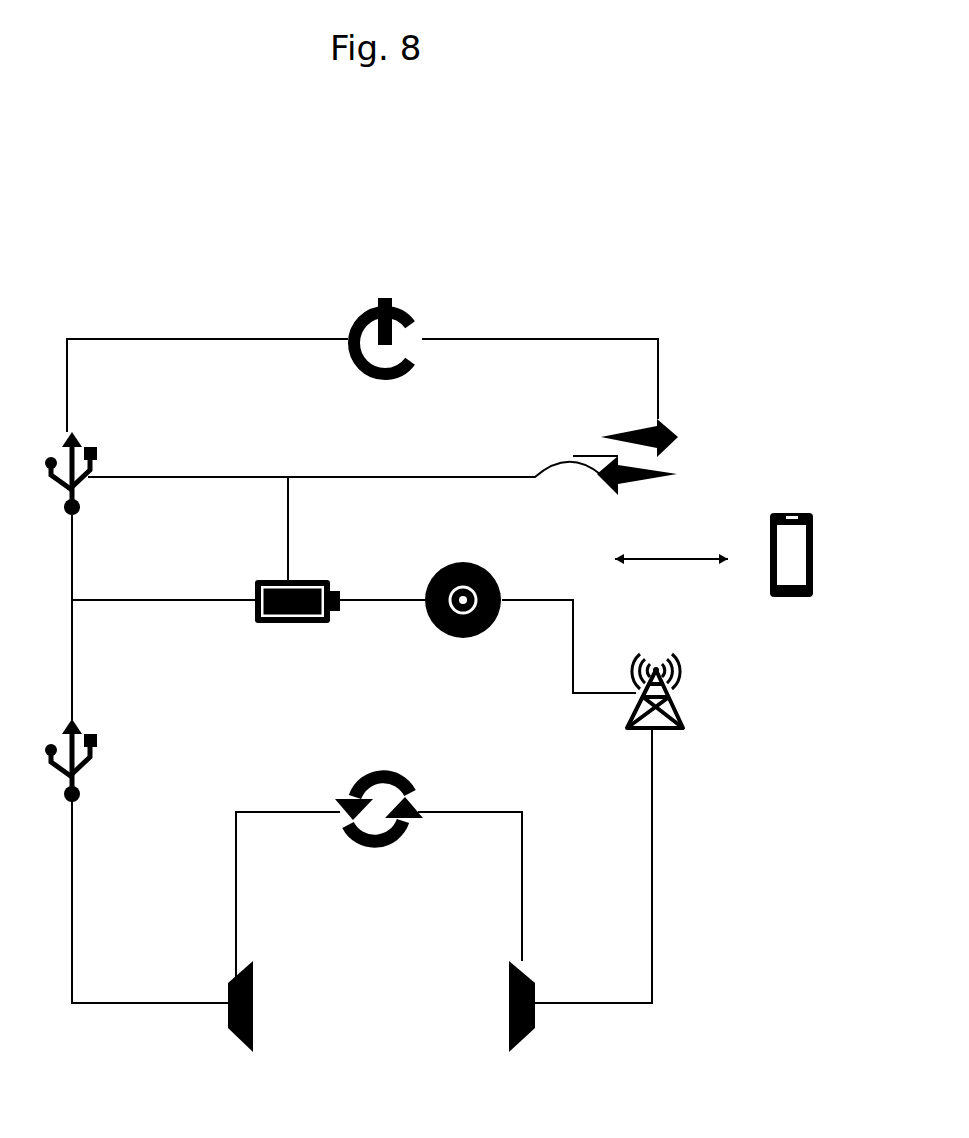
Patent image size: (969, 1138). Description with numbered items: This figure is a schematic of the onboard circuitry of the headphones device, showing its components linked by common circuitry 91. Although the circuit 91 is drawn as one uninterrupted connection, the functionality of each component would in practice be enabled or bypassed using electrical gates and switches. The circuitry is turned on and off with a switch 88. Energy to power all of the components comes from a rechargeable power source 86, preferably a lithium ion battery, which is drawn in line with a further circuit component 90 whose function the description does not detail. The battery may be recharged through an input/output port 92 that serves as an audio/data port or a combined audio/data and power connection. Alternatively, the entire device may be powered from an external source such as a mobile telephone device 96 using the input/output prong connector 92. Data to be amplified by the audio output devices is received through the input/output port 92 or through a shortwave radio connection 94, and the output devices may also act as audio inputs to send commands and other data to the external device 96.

The rechargeable power source 86 is at (318, 580).
The switch 88 is at (417, 322).
The microphone 90 is at (487, 567).
The common circuitry 91 is at (222, 339).
The input/output port 92 is at (680, 437).
The shortwave radio connection 94 is at (678, 712).
The mobile telephone device 96 is at (813, 567).